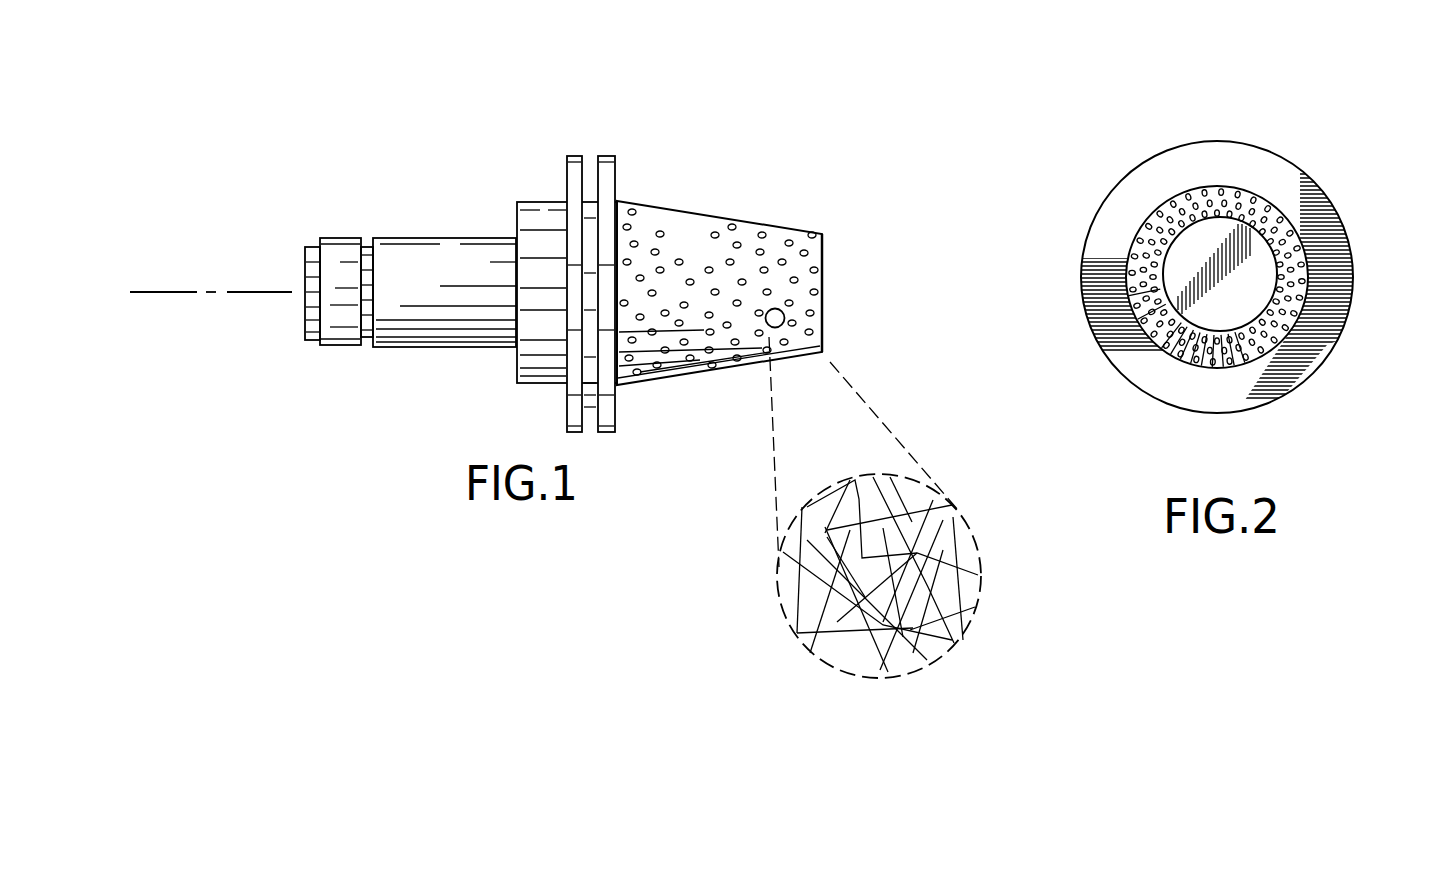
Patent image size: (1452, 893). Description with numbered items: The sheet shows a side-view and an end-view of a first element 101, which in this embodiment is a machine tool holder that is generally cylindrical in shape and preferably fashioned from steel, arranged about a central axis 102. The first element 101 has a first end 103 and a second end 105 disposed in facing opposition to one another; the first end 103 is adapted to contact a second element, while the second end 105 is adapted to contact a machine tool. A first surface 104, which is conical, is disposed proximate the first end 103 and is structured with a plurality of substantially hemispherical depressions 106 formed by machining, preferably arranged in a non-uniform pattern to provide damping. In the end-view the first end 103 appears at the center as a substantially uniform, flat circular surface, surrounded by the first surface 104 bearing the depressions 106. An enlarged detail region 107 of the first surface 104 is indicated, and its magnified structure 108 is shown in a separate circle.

In FIG. 1, the first element 101 is at (577, 135).
In FIG. 2, the first element 101 is at (1350, 168).
In FIG. 1, the central axis 102 is at (235, 287).
In FIG. 1, the first end 103 is at (823, 252).
In FIG. 2, the first end 103 is at (1262, 287).
In FIG. 1, the first surface 104 is at (732, 217).
In FIG. 2, the first surface 104 is at (1224, 358).
In FIG. 1, the second end 105 is at (303, 258).
In FIG. 1, the depressions 106 is at (708, 268).
In FIG. 2, the depressions 106 is at (1138, 248).
In FIG. 1, the enlarged detail view 107 is at (990, 624).
In FIG. 1, the abrasive fibers 108 is at (835, 620).